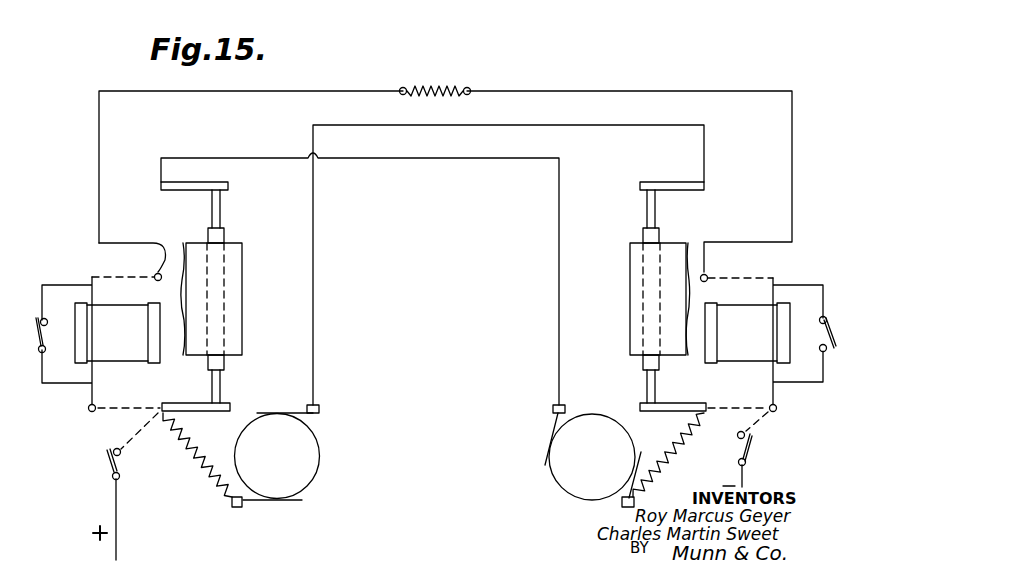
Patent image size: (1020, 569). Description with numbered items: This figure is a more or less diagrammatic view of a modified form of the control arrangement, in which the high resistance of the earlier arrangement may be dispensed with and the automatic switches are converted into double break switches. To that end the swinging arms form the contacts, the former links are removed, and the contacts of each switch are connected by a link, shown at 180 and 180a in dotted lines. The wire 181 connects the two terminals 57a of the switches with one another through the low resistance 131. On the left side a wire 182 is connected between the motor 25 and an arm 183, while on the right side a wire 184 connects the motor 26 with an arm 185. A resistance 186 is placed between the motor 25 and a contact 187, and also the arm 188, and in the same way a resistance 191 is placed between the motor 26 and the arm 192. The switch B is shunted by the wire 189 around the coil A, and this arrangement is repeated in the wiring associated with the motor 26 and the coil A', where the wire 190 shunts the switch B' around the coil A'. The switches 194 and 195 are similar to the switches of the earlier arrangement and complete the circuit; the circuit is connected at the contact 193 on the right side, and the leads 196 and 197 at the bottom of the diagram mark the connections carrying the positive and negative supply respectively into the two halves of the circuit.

The wire 181 is at (298, 90).
The low resistance 131 is at (463, 88).
The wire 182 is at (314, 335).
The wire 184 is at (558, 232).
The arm 185 is at (230, 186).
The arm 183 is at (650, 183).
The link 180 is at (228, 303).
The link 180a is at (640, 300).
The terminal 57a is at (160, 270).
The wire 189 is at (60, 385).
The wire 190 is at (793, 283).
The arm 188 is at (186, 402).
The resistance 186 is at (192, 441).
The motor 25 is at (308, 457).
The motor 26 is at (567, 468).
The contact 187 is at (89, 412).
The switch 195 is at (119, 469).
The positive lead 196 is at (118, 516).
The arm 192 is at (668, 403).
The resistance 191 is at (684, 440).
The contact 193 is at (778, 408).
The switch 194 is at (745, 455).
The negative lead 197 is at (745, 481).